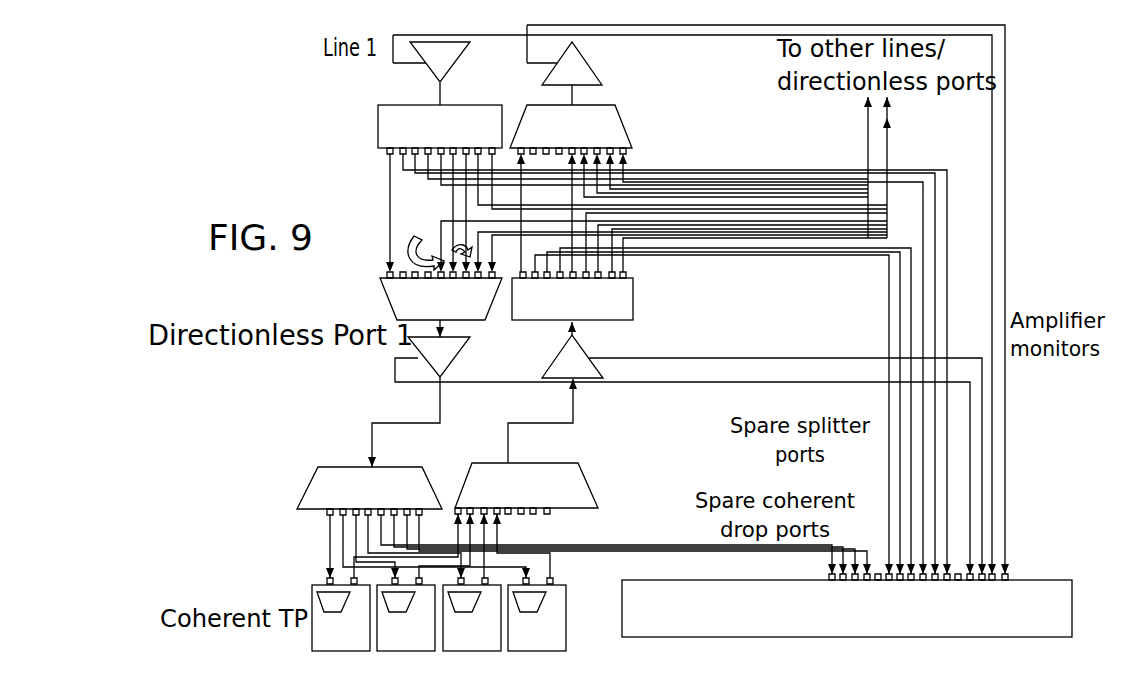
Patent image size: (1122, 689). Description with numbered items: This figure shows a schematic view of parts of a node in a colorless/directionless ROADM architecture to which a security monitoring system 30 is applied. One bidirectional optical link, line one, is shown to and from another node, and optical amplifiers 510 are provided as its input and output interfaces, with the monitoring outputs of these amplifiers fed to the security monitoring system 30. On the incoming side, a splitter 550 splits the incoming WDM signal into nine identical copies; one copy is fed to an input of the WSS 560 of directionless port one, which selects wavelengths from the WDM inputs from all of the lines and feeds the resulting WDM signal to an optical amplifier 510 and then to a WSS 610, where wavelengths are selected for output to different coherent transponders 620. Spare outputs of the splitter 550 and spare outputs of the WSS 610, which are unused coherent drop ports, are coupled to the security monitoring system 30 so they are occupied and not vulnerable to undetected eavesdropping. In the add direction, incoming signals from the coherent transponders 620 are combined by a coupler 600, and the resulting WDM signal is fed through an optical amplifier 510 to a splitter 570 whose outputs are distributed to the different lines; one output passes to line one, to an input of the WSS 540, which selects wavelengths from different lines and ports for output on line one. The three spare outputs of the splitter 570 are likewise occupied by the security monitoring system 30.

The optical amplifier 510 is at (520, 210).
The WSS 540 is at (589, 129).
The splitter 550 is at (411, 129).
The WSS 560 is at (414, 296).
The splitter 570 is at (599, 296).
The coupler 600 is at (550, 487).
The WSS 610 is at (350, 491).
The coherent transponder 620 is at (439, 614).
The security monitoring system 30 is at (847, 605).